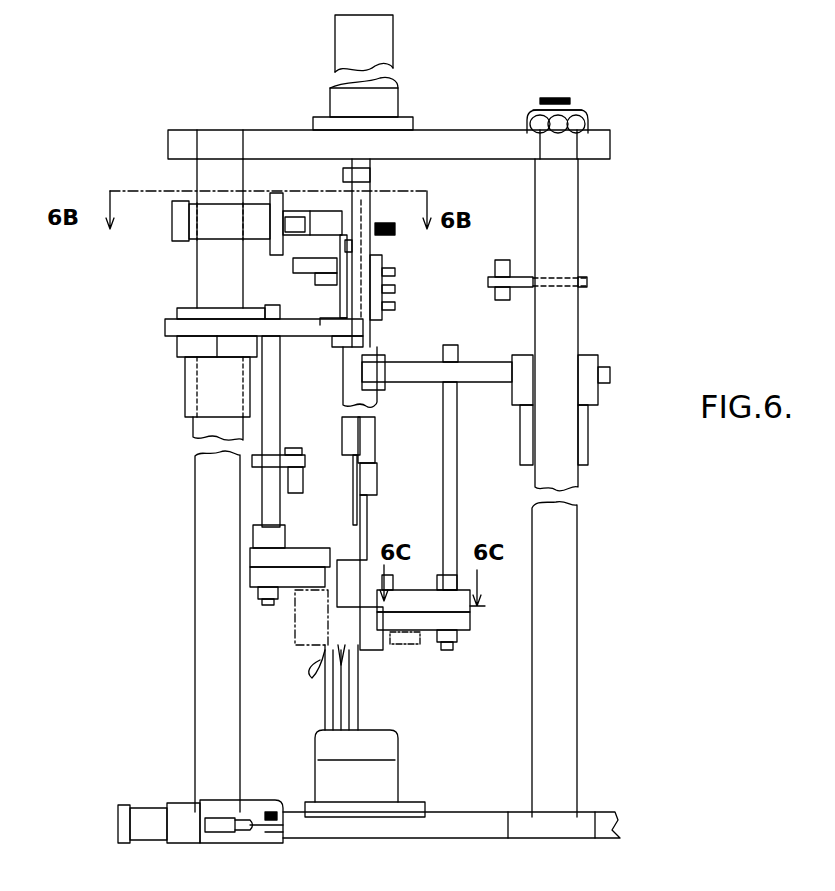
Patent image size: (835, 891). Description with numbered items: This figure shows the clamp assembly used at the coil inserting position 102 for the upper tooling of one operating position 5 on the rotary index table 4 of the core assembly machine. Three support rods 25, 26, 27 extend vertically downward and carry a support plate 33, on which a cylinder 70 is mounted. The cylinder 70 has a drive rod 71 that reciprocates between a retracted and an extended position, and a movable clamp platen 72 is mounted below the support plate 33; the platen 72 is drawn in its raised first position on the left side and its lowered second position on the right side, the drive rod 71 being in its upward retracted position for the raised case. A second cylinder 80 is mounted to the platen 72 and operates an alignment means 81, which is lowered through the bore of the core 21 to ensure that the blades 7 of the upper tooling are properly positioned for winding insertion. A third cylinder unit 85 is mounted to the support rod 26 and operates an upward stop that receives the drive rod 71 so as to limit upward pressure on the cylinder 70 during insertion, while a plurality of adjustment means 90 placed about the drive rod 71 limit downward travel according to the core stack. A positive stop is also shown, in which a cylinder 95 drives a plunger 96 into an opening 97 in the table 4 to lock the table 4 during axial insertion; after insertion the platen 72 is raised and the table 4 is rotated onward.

The rotary index table 4 is at (453, 832).
The operating position 5 is at (420, 788).
The blades 7 is at (358, 715).
The core 21 is at (287, 620).
The support rod 25 is at (565, 100).
The support rod 26 is at (207, 130).
The support rod 27 is at (37, 890).
The support plate 33 is at (432, 140).
The cylinder 70 is at (388, 80).
The drive rod 71 is at (368, 188).
The movable clamp platen 72 is at (305, 327).
The second cylinder 80 is at (365, 446).
The alignment means 81 is at (387, 658).
The third cylinder unit 85 is at (232, 226).
The adjustment means 90 is at (395, 292).
The cylinder 95 is at (147, 805).
The plunger 96 is at (232, 834).
The opening 97 is at (285, 838).
The coil inserting position 102 is at (407, 768).